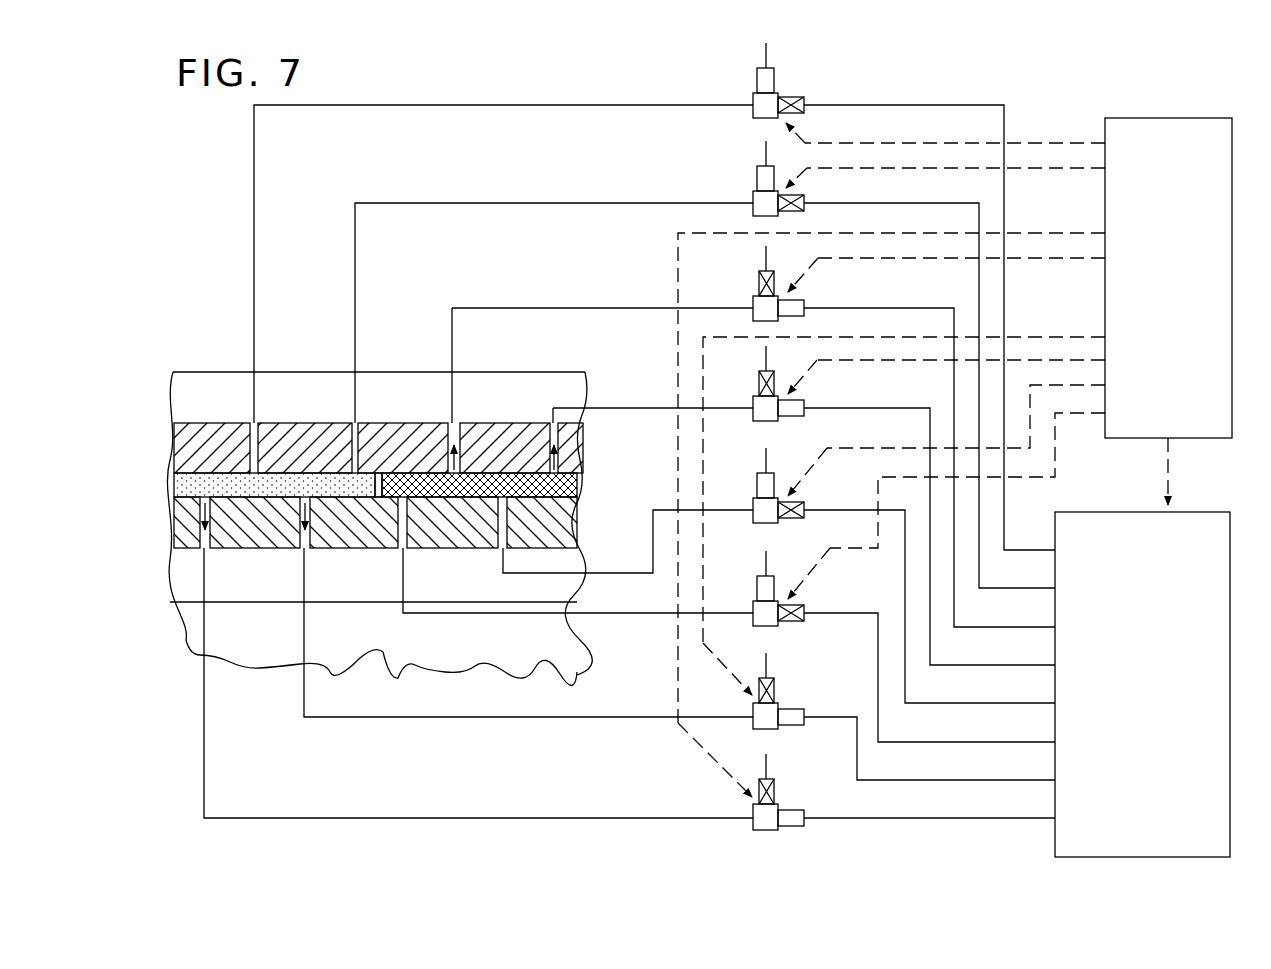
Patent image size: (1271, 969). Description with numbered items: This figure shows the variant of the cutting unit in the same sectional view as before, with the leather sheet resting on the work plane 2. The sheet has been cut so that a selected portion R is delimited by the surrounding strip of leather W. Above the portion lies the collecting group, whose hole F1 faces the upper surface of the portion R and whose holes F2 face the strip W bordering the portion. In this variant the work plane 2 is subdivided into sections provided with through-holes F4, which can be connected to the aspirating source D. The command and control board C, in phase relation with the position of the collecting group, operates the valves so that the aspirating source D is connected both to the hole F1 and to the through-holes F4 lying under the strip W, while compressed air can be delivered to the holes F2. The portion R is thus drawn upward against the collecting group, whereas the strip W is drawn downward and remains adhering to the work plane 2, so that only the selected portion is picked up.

The work plane 2 is at (175, 517).
The strip of the leather W is at (220, 483).
The portion R is at (498, 482).
The hole F1 is at (448, 452).
The holes F2 is at (562, 455).
The through-holes F4 is at (213, 520).
The command and control board C is at (1181, 292).
The aspirating source D is at (1156, 700).